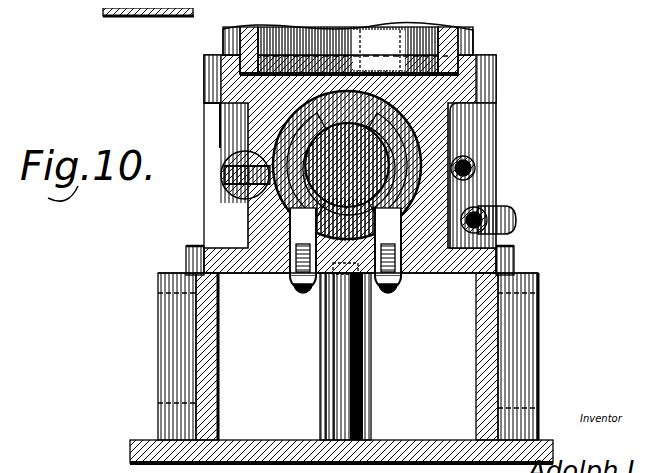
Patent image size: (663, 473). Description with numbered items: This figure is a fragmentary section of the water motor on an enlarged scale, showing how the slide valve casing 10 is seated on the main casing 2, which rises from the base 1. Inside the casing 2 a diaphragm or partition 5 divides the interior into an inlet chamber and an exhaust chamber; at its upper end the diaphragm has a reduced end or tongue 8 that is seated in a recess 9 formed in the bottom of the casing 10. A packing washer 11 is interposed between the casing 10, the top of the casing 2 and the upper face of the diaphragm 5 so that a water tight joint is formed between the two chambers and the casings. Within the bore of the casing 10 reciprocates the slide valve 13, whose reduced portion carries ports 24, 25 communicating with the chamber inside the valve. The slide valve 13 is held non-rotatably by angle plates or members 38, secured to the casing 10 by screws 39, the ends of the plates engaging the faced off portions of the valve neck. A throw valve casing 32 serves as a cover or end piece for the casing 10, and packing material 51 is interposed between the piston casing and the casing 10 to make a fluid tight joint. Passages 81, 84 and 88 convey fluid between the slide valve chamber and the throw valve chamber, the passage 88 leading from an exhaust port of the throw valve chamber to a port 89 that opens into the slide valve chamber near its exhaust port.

The base 1 is at (130, 438).
The casing 2 is at (512, 330).
The diaphragm or partition 5 is at (411, 370).
The reduced end or tongue 8 is at (332, 270).
The recess 9 is at (338, 258).
The slide valve casing 10 is at (480, 73).
The packing washer 11 is at (469, 278).
The slide valve 13 is at (405, 135).
The port 24 is at (388, 118).
The port 25 is at (400, 190).
The throw valve casing 32 is at (134, 2).
The angle plates or members 38 is at (295, 213).
The screws 39 is at (295, 276).
The packing material 51 is at (447, 66).
The passage 81 is at (466, 165).
The passage 84 is at (487, 211).
The passage 88 is at (219, 176).
The port 89 is at (245, 172).